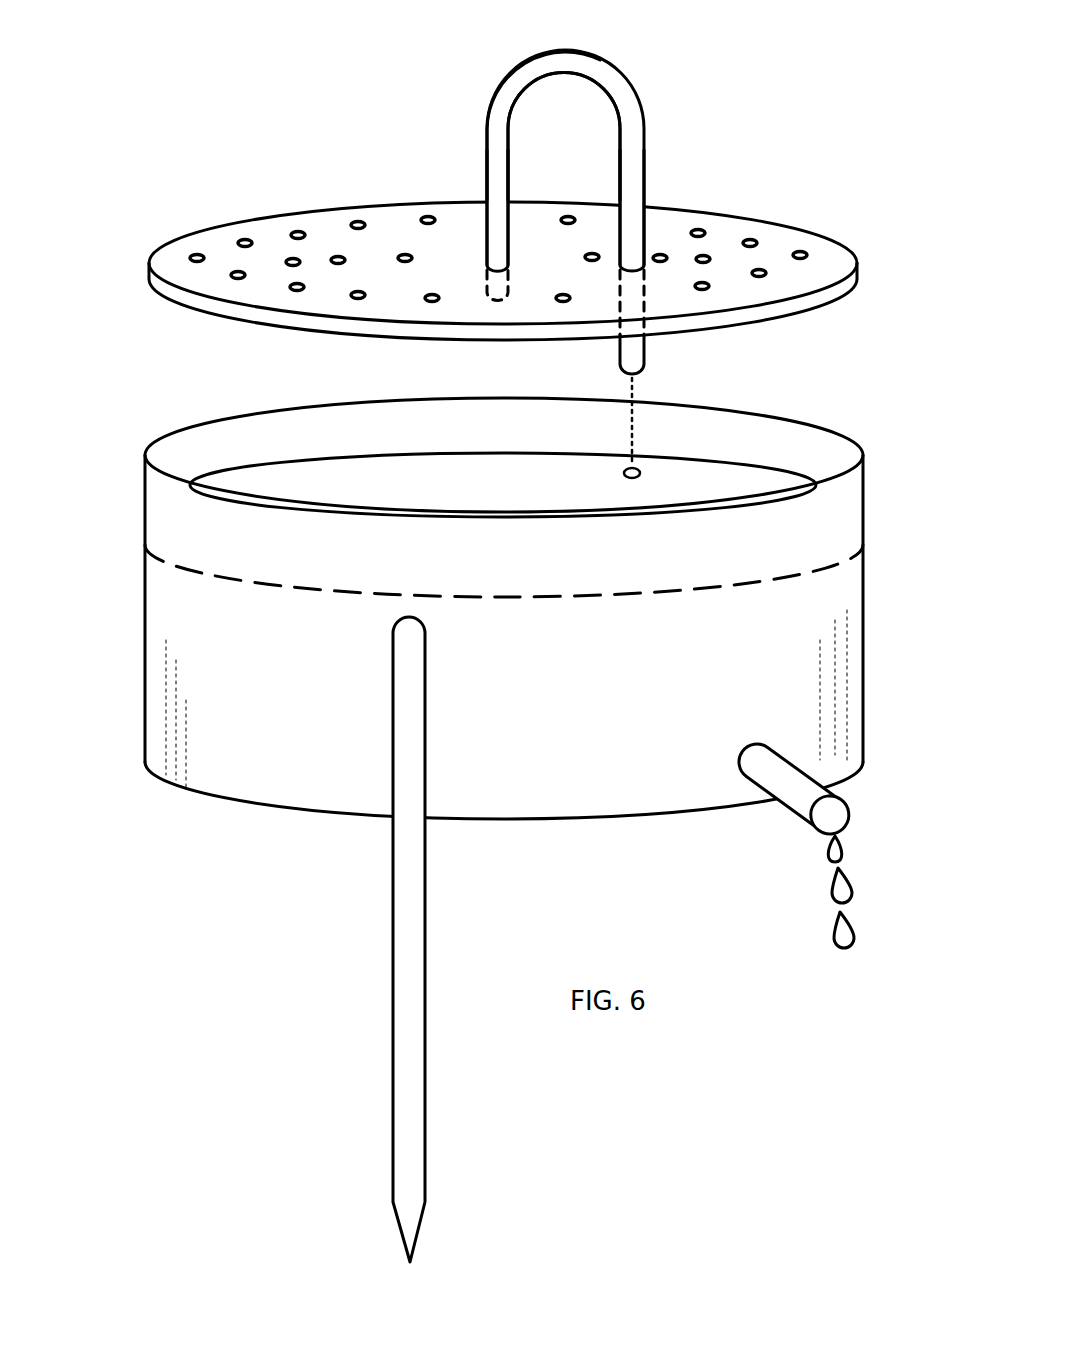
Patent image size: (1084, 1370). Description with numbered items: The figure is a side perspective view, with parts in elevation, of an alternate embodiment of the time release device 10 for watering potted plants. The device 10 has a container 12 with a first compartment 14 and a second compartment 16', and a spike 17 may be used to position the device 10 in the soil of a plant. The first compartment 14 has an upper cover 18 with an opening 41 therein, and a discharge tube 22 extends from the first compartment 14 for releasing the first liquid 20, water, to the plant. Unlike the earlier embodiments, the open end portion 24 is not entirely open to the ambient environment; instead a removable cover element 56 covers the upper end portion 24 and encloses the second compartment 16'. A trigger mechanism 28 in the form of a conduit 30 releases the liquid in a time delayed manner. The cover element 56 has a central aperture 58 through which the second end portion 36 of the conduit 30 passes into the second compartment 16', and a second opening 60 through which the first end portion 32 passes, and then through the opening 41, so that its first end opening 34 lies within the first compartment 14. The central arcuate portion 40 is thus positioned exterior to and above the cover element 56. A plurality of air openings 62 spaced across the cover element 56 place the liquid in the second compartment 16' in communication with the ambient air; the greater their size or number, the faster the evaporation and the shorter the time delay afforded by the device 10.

The time release device 10 is at (470, 810).
The container 12 is at (472, 589).
The first compartment 14 is at (210, 694).
The second compartment 16' is at (504, 443).
The spike 17 is at (412, 930).
The upper cover 18 is at (318, 460).
The first liquid 20 is at (830, 890).
The discharge tube 22 is at (792, 800).
The open end portion 24 is at (498, 443).
The trigger mechanism 28 is at (579, 241).
The conduit 30 is at (612, 78).
The first end portion 32 is at (632, 352).
The first end opening 34 is at (635, 375).
The second end portion 36 is at (490, 238).
The central arcuate portion 40 is at (517, 78).
The opening 41 is at (620, 474).
The removable cover element 56 is at (498, 247).
The central aperture 58 is at (500, 262).
The second opening 60 is at (640, 256).
The air openings 62 is at (245, 240).